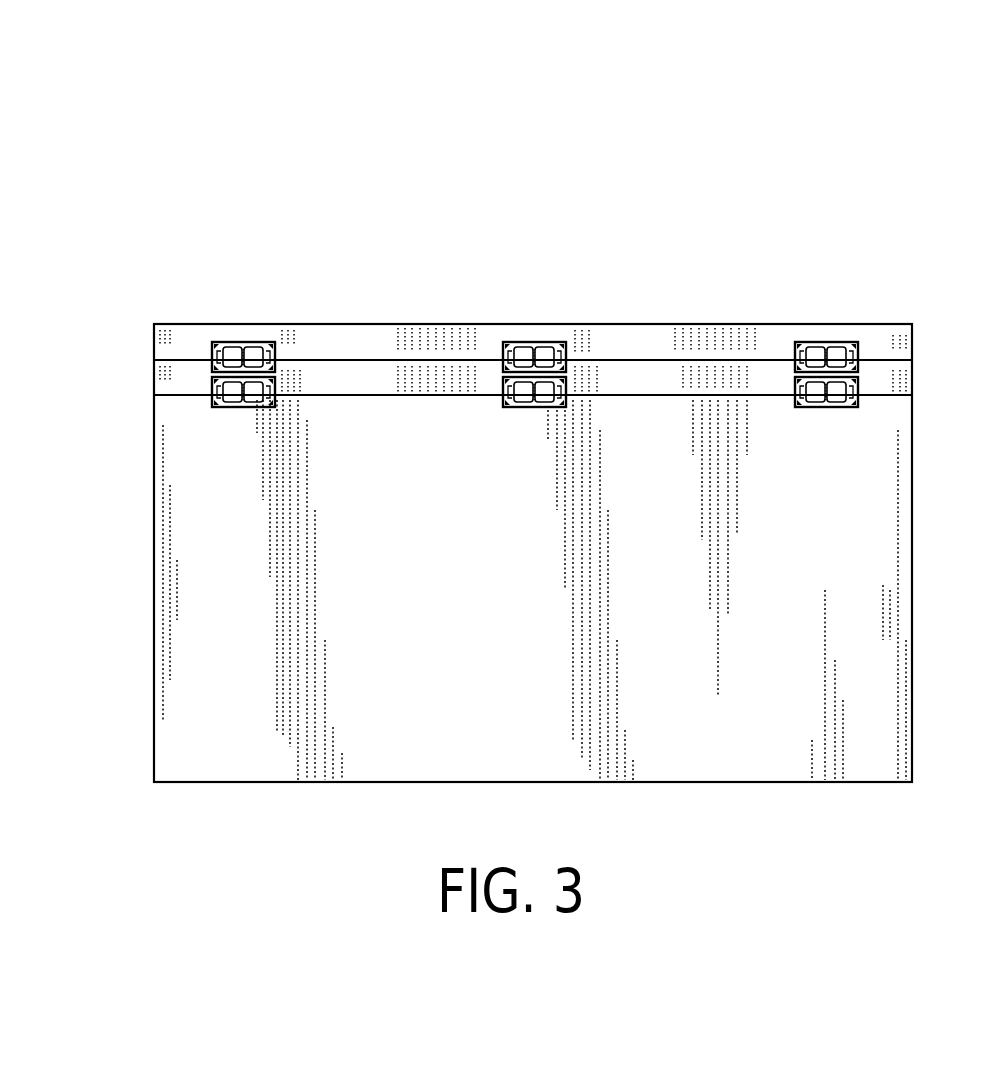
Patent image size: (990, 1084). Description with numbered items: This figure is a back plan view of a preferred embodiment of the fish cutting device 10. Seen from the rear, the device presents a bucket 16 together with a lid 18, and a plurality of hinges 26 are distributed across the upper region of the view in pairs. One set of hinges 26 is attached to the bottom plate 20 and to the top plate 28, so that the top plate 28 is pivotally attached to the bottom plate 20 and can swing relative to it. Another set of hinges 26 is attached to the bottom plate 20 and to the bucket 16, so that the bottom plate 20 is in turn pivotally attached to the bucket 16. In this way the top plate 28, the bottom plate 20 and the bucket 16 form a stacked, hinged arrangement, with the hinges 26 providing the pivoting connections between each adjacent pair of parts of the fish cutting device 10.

The fish cutting device 10 is at (340, 148).
The bucket 16 is at (912, 503).
The lid 18 is at (912, 359).
The bottom plate 20 is at (632, 375).
The hinges 26 is at (225, 408).
The top plate 28 is at (707, 335).